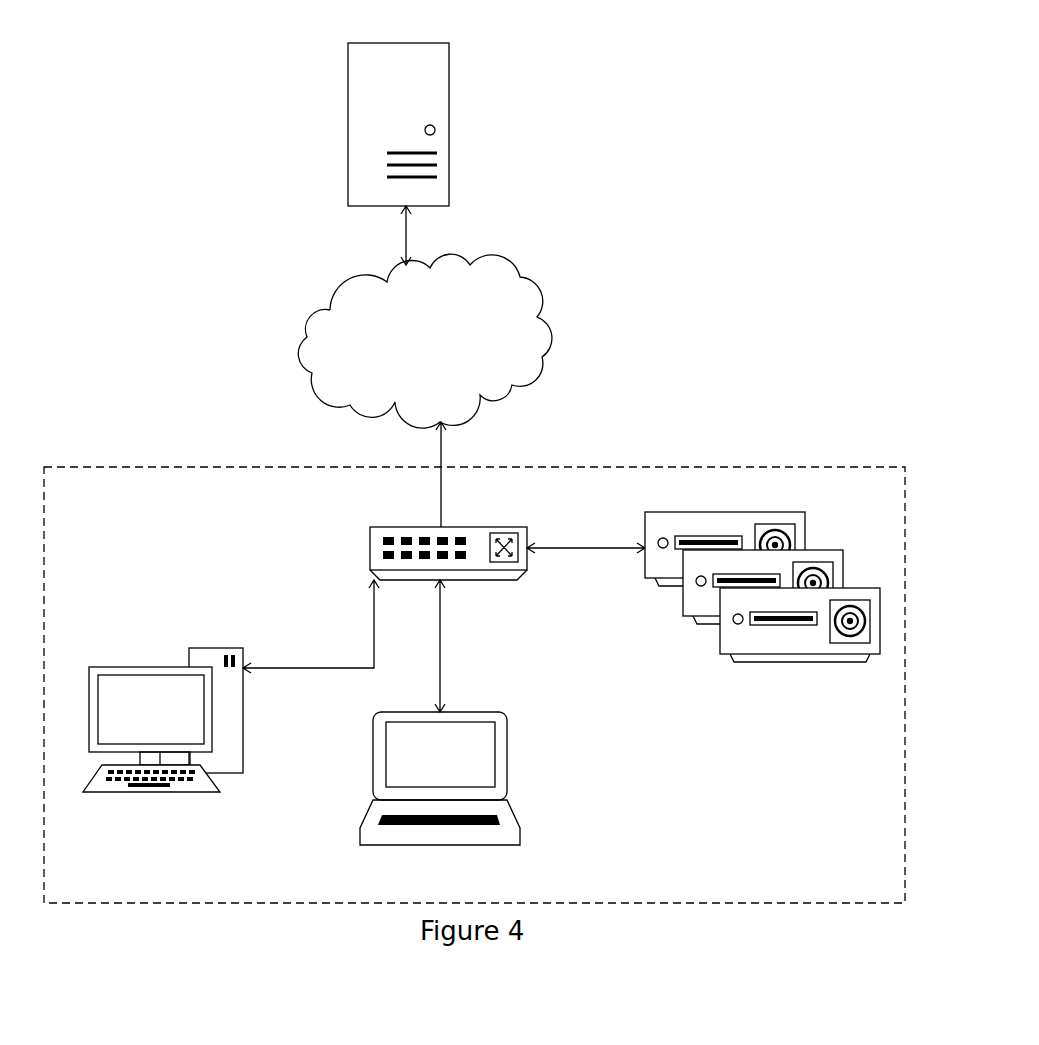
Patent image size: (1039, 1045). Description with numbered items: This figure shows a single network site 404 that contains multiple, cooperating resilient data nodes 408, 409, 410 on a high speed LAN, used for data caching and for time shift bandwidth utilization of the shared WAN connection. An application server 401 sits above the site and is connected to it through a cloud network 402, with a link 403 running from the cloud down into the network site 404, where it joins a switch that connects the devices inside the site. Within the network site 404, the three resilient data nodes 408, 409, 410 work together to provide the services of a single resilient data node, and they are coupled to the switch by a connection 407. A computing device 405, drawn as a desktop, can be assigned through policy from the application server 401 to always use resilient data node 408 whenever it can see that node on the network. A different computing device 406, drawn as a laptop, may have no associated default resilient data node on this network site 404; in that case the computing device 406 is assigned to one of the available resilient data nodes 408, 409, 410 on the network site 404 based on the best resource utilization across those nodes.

The application server 401 is at (347, 128).
The network cloud 402 is at (538, 296).
The network connection 403 is at (441, 451).
The network site 404 is at (370, 530).
The computing device 405 is at (202, 643).
The computing device 406 is at (507, 741).
The connection to storage devices 407 is at (632, 527).
The resilient data node 408 is at (687, 512).
The resilient data node 409 is at (690, 616).
The resilient data node 410 is at (748, 665).